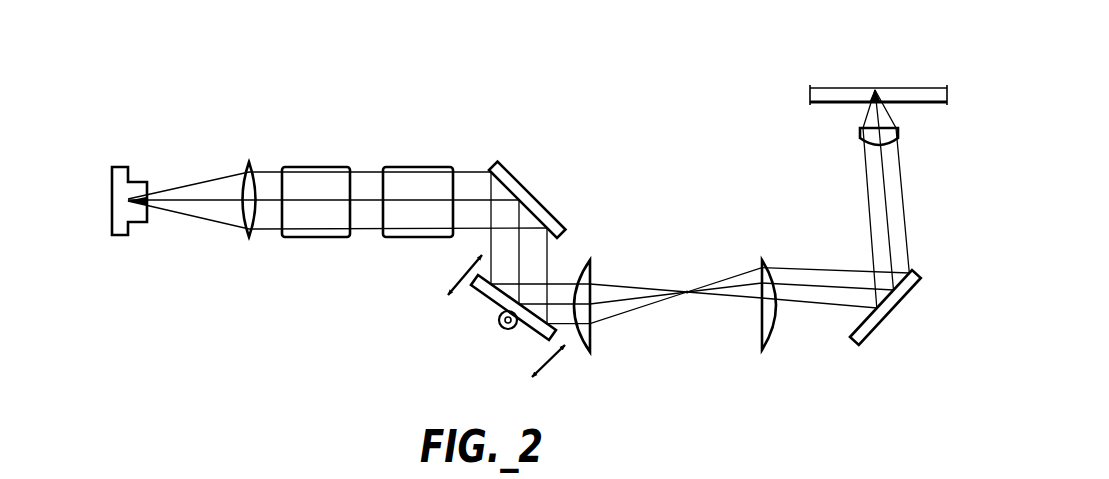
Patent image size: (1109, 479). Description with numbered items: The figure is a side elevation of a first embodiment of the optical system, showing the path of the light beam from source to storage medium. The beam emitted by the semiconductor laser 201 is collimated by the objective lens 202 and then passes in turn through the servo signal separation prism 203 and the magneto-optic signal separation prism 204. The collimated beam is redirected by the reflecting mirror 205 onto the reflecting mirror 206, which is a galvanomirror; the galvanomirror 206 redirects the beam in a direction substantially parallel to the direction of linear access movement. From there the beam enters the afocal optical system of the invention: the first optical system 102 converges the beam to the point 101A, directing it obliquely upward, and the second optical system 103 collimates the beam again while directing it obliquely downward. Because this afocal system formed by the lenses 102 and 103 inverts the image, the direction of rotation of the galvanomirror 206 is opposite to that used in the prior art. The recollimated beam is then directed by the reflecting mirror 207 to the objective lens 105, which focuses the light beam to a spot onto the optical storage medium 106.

The semiconductor laser 201 is at (123, 167).
The objective lens 202 is at (250, 164).
The servo signal separation prism 203 is at (343, 167).
The magneto-optic signal separation prism 204 is at (420, 167).
The reflecting mirror 205 is at (507, 167).
The galvanomirror 206 is at (492, 303).
The first optical system 102 is at (592, 335).
The point 101A is at (687, 292).
The second optical system 103 is at (758, 323).
The reflecting mirror 207 is at (893, 315).
The objective lens 105 is at (860, 133).
The optical storage medium 106 is at (907, 88).